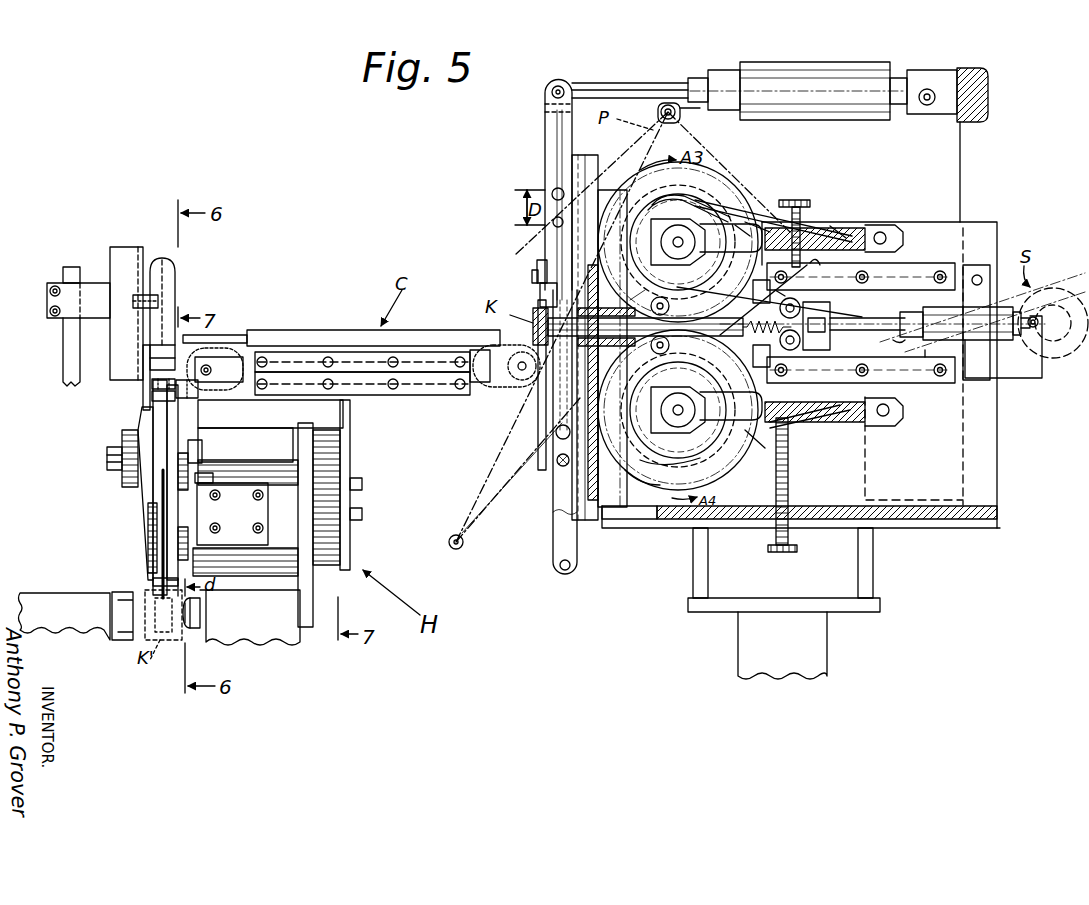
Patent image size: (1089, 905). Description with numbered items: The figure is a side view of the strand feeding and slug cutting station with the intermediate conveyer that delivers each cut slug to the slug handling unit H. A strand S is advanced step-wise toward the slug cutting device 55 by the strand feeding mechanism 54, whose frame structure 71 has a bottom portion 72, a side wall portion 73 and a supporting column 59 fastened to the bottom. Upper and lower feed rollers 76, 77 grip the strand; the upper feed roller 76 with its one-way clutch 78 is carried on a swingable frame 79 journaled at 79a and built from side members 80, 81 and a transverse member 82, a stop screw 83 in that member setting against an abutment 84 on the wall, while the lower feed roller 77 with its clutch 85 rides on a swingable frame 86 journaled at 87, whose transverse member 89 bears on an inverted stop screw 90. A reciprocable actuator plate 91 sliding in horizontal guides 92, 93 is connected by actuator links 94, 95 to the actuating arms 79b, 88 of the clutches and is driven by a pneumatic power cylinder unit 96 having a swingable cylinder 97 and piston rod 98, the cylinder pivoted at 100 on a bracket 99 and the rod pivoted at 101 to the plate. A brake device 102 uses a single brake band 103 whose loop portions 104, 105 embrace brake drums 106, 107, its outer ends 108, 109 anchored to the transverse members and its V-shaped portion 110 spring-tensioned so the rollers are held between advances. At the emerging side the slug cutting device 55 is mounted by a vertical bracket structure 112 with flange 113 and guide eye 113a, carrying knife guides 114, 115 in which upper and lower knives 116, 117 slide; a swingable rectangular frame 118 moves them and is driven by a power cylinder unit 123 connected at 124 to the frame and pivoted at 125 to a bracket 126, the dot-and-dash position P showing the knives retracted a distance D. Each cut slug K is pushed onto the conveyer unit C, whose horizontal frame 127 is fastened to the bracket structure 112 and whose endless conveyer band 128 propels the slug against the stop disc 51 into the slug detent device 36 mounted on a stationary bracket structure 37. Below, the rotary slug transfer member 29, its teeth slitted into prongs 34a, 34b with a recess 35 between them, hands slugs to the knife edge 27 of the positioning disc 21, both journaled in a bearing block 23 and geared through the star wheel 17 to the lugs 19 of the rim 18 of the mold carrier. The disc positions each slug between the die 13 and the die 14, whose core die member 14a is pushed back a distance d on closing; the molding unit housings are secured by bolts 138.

The die 13 is at (122, 641).
The shaft 14 is at (190, 627).
The core die member 14a is at (188, 617).
The star wheel 17 is at (306, 575).
The rim 18 is at (290, 606).
The pins or lugs 19 is at (317, 620).
The disc 21 is at (165, 581).
The bearing block 23 is at (240, 556).
The peripheral knife edge 27 is at (143, 613).
The rotary slug transfer member 29 is at (158, 475).
The prong 34a is at (158, 383).
The prong 34b is at (176, 386).
The recess 35 is at (160, 395).
The slug detent device 36 is at (188, 289).
The stationary bracket structure 37 is at (70, 317).
The abutment or stop disc 51 is at (143, 354).
The strand feeding mechanism 54 is at (970, 185).
The slug cutting device 55 is at (541, 163).
The stand or column 59 is at (738, 649).
The frame structure 71 is at (1003, 240).
The bottom portion 72 is at (998, 511).
The side wall portion 73 is at (922, 228).
The upper feed roller 76 is at (701, 178).
The lower feed roller 77 is at (722, 478).
The one-way coaxial drive unit or clutch 78 is at (687, 197).
The swingable frame 79 is at (739, 221).
The journal 79a is at (882, 236).
The actuating arm 79b is at (748, 310).
The side member 80 is at (765, 232).
The side member 81 is at (743, 232).
The transverse member 82 is at (825, 240).
The stop screw 83 is at (802, 199).
The abutment 84 is at (823, 273).
The one-way coaxial drive unit or clutch 85 is at (670, 456).
The swingable frame 86 is at (748, 432).
The journal 87 is at (884, 414).
The actuating arm 88 is at (698, 357).
The transverse member 89 is at (818, 412).
The inverted stop screw 90 is at (788, 490).
The reciprocable actuator plate 91 is at (900, 343).
The horizontal guide 92 is at (915, 275).
The horizontal guide 93 is at (930, 373).
The actuator link 94 is at (774, 293).
The actuator link 95 is at (861, 371).
The pneumatically operated power cylinder unit 96 is at (977, 347).
The swingable cylinder 97 is at (1003, 337).
The piston rod 98 is at (875, 327).
The bracket 99 is at (1037, 379).
The pivot connection 100 is at (1030, 333).
The pivotal connection 101 is at (825, 317).
The brake device 102 is at (800, 432).
The brake band 103 is at (756, 329).
The loop portion 104 is at (665, 195).
The loop portion 105 is at (686, 455).
The brake drum 106 is at (699, 280).
The brake drum 107 is at (692, 411).
The outer end 108 is at (837, 225).
The outer end 109 is at (840, 428).
The V-shaped or vortex portion 110 is at (752, 316).
The vertical bracket structure 112 is at (590, 505).
The vertical flange 113 is at (613, 485).
The guide sleeve or guide eye 113a is at (638, 293).
The vertical knife guide 114 is at (558, 237).
The vertical knife guide 115 is at (557, 412).
The upper slug cutting knife 116 is at (548, 296).
The lower slug cutting knife 117 is at (552, 360).
The vertical swingable rectangular frame 118 is at (541, 132).
The pneumatic power cylinder unit 123 is at (848, 80).
The pivotal connection 124 is at (567, 83).
The pivotal connection 125 is at (928, 90).
The bracket 126 is at (980, 68).
The horizontal frame 127 is at (480, 386).
The endless conveyer band 128 is at (242, 352).
The bolts 138 is at (160, 327).